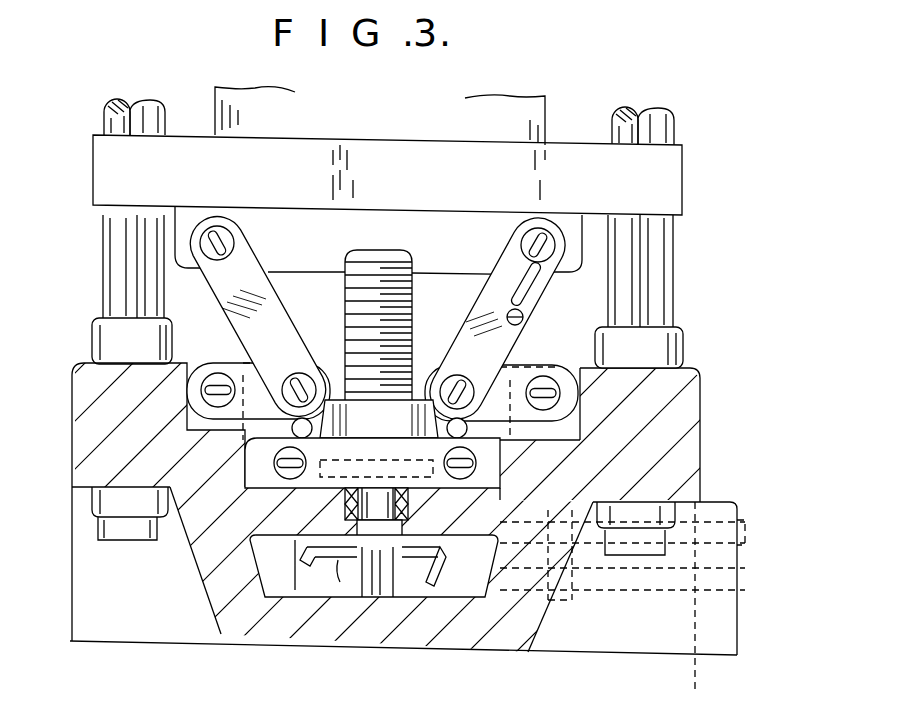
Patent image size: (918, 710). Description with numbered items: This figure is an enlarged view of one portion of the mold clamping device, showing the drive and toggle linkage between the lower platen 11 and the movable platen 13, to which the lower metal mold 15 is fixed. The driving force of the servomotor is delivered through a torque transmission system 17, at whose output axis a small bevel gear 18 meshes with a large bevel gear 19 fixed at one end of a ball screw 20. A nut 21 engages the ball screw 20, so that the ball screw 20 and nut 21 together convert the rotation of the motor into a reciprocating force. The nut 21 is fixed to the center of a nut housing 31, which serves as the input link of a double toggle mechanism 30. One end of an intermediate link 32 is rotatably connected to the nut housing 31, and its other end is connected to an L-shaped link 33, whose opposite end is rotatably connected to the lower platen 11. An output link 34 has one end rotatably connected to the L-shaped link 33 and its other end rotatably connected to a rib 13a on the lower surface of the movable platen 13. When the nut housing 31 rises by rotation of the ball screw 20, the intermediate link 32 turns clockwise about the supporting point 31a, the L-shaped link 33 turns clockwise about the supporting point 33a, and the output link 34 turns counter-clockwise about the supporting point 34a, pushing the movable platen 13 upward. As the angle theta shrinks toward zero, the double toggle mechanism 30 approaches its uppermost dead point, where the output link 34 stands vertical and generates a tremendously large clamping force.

The lower platen 11 is at (676, 425).
The movable platen 13 is at (686, 148).
The rib 13a is at (578, 233).
The lower metal mold 15 is at (545, 108).
The torque transmission system 17 is at (722, 511).
The small bevel gear 18 is at (374, 592).
The large bevel gear 19 is at (368, 592).
The ball screw 20 is at (412, 318).
The nut 21 is at (325, 348).
The double toggle mechanism 30 is at (552, 318).
The nut housing 31 is at (496, 474).
The supporting point 31a is at (474, 468).
The intermediate link 32 is at (470, 436).
The L-shaped link 33 is at (522, 362).
The supporting point 33a is at (684, 360).
The output link 34 is at (563, 298).
The supporting point 34a is at (565, 245).